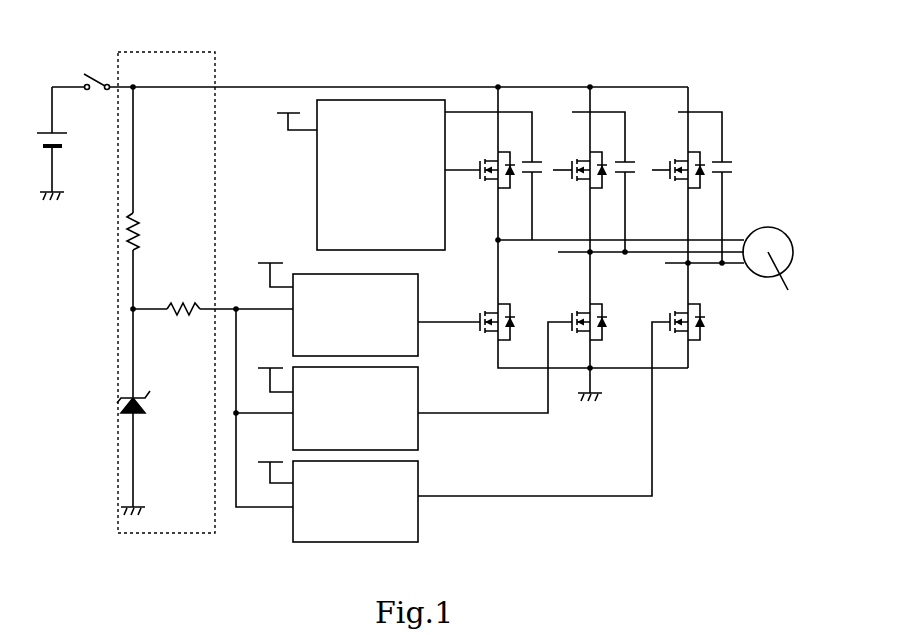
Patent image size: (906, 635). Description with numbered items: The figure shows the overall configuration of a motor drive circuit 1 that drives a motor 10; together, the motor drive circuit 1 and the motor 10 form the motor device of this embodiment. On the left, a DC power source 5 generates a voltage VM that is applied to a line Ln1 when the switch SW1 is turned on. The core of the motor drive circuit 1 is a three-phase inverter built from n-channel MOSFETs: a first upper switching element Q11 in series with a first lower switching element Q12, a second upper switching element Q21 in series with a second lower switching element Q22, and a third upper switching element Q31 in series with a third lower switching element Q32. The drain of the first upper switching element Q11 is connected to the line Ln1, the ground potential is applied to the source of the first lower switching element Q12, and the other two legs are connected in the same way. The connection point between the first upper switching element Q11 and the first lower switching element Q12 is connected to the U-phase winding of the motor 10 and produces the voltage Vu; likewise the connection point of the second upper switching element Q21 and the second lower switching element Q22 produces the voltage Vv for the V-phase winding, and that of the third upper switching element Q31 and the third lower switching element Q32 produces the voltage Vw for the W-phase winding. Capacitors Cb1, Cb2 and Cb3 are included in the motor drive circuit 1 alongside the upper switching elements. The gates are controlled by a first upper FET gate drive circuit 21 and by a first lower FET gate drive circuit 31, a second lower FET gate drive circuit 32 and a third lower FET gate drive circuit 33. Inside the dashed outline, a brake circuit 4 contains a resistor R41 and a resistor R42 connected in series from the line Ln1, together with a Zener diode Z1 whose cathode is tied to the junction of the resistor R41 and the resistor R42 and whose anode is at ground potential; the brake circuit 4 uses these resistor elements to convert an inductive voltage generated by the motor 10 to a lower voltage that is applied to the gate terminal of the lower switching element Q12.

The motor drive circuit 1 is at (518, 61).
The brake circuit 4 is at (214, 52).
The DC power source 5 is at (72, 139).
The motor 10 is at (758, 272).
The first upper FET gate drive circuit 21 is at (317, 232).
The first lower FET gate drive circuit 31 is at (418, 278).
The second lower FET gate drive circuit 32 is at (418, 381).
The third lower FET gate drive circuit 33 is at (418, 474).
The switch SW1 is at (94, 71).
The line Ln1 is at (383, 86).
The resistor R41 is at (140, 233).
The resistor R42 is at (179, 302).
The Zener diode Z1 is at (146, 403).
The first upper switching element Q11 is at (487, 161).
The second upper switching element Q21 is at (579, 161).
The third upper switching element Q31 is at (677, 161).
The first lower switching element Q12 is at (487, 311).
The second lower switching element Q22 is at (579, 311).
The third lower switching element Q32 is at (677, 311).
The capacitor Cb1 is at (539, 173).
The capacitor Cb2 is at (633, 173).
The capacitor Cb3 is at (735, 173).
The voltage applied to the U-phase winding Vu is at (621, 250).
The voltage applied to the V-phase winding Vv is at (651, 263).
The voltage applied to the W-phase winding Vw is at (704, 274).
The voltage VM is at (34, 123).